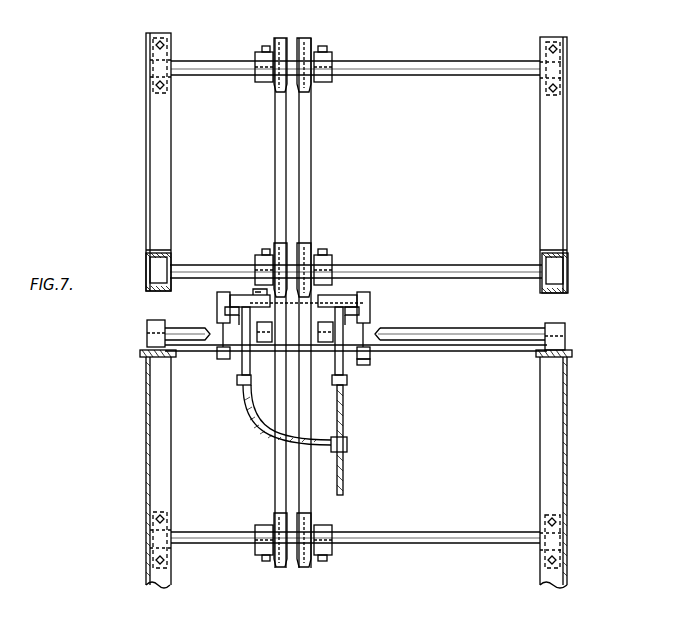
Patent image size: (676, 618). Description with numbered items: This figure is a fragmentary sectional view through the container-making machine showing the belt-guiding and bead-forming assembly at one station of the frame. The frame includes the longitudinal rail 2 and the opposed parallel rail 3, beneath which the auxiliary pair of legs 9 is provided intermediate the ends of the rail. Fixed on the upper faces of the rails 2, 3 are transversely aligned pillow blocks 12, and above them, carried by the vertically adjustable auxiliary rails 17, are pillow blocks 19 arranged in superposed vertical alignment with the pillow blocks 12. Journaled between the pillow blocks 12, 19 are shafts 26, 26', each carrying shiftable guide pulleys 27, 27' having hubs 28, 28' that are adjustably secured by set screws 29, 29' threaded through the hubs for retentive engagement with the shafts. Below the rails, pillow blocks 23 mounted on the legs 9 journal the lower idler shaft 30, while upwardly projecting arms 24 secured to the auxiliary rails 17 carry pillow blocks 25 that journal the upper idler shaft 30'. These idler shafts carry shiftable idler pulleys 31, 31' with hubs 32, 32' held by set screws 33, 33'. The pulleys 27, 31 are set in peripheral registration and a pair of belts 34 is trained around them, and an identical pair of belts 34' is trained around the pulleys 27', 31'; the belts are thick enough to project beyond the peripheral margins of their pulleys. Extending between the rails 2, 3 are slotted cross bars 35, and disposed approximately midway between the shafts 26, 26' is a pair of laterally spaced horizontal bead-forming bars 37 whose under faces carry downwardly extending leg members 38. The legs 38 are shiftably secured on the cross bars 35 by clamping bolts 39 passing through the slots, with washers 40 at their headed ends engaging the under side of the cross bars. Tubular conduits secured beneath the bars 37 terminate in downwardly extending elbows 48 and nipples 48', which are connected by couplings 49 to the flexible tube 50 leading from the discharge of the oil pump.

The longitudinal rail 2 is at (570, 376).
The rail 3 is at (147, 366).
The auxiliary pair of legs 9 is at (147, 440).
The pillow blocks 12 is at (152, 321).
The auxiliary rails 17 is at (150, 248).
The pillow blocks 19 is at (156, 272).
The pillow blocks 23 is at (168, 526).
The upwardly projecting arms 24 is at (147, 88).
The pillow blocks 25 is at (168, 50).
The shaft 26 is at (355, 322).
The shaft 26' is at (356, 254).
The guide pulleys 27 is at (321, 362).
The guide pulleys 27' is at (320, 247).
The hubs 28 is at (251, 346).
The hubs 28' is at (311, 260).
The set screws 29 is at (262, 361).
The set screws 29' is at (324, 255).
The idler shaft 30 is at (355, 553).
The idler shaft 30' is at (355, 80).
The idler pulleys 31 is at (294, 557).
The idler pulleys 31' is at (307, 49).
The hubs 32 is at (298, 527).
The hubs 32' is at (314, 63).
The set screws 33 is at (310, 559).
The set screws 33' is at (318, 37).
The belts 34 is at (272, 434).
The belts 34' is at (271, 169).
The cross bars 35 is at (488, 348).
The bead-forming bars 37 is at (218, 300).
The leg members 38 is at (218, 322).
The clamping bolts 39 is at (347, 360).
The washers 40 is at (370, 352).
The elbows 48 is at (288, 317).
The nipples 48' is at (289, 368).
The couplings 49 is at (347, 445).
The flexible tube 50 is at (345, 468).